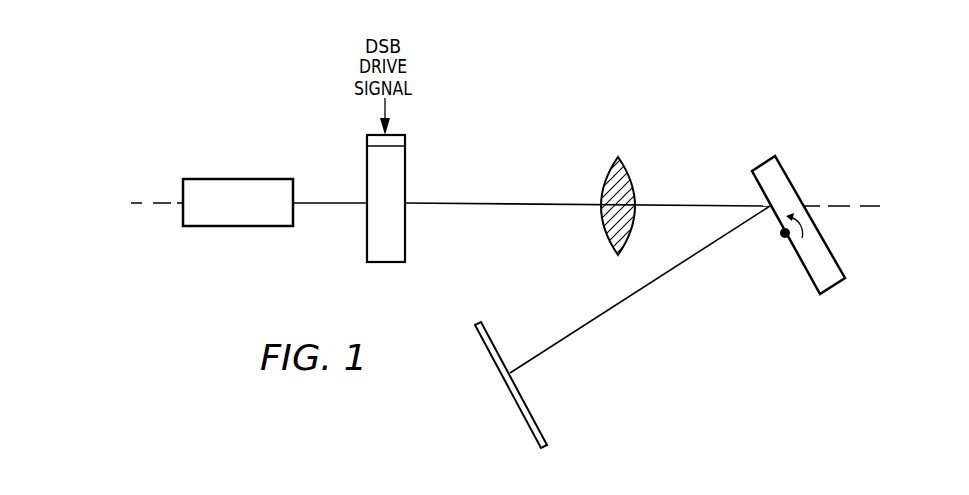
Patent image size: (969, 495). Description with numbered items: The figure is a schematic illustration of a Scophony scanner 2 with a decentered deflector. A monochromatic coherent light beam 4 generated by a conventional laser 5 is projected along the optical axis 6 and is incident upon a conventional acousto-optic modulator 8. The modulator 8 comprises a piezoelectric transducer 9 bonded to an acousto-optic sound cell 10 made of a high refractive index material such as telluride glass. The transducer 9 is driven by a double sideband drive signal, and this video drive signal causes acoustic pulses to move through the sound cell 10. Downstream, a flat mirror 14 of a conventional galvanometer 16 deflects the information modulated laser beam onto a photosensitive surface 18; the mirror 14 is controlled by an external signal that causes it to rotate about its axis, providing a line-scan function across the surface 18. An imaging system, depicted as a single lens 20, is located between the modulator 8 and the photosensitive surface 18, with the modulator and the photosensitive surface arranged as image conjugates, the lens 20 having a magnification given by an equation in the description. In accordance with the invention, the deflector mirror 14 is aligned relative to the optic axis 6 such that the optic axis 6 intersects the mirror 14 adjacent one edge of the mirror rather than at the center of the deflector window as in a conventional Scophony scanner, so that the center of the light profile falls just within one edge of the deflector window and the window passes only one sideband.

The Scophony scanner 2 is at (485, 176).
The monochromatic coherent light beam 4 is at (335, 202).
The laser 5 is at (247, 179).
The optical axis 6 is at (162, 202).
The acousto-optic modulator 8 is at (405, 176).
The piezoelectric transducer 9 is at (405, 137).
The acousto-optic sound cell 10 is at (393, 241).
The flat mirror 14 is at (784, 240).
The galvanometer 16 is at (803, 191).
The photosensitive surface 18 is at (540, 425).
The lens 20 is at (633, 170).